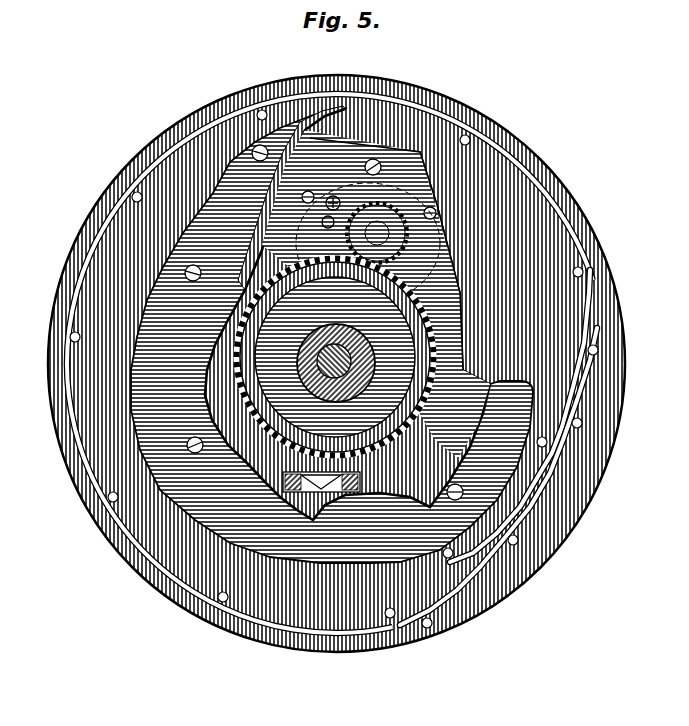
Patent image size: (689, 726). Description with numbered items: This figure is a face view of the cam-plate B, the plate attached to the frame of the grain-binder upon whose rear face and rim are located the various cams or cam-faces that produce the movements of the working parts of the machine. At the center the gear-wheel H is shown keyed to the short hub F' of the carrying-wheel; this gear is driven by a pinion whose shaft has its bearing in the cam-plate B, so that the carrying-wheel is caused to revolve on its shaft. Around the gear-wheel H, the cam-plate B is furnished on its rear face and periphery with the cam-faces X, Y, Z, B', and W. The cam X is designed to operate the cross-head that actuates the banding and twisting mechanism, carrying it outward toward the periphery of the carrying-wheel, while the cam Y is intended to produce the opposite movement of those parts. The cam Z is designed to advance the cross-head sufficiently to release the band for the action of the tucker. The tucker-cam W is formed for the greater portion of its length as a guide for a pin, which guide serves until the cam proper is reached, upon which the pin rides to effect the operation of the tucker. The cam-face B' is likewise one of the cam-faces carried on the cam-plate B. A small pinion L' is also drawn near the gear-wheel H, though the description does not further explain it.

The cam-plate B is at (336, 363).
The cam-face B' is at (512, 447).
The cam Y is at (332, 334).
The cam X is at (376, 294).
The gear-wheel H is at (335, 357).
The short hub F' is at (336, 363).
The pinion L' is at (377, 233).
The tucker-cam W is at (301, 648).
The cam-face Z is at (321, 482).